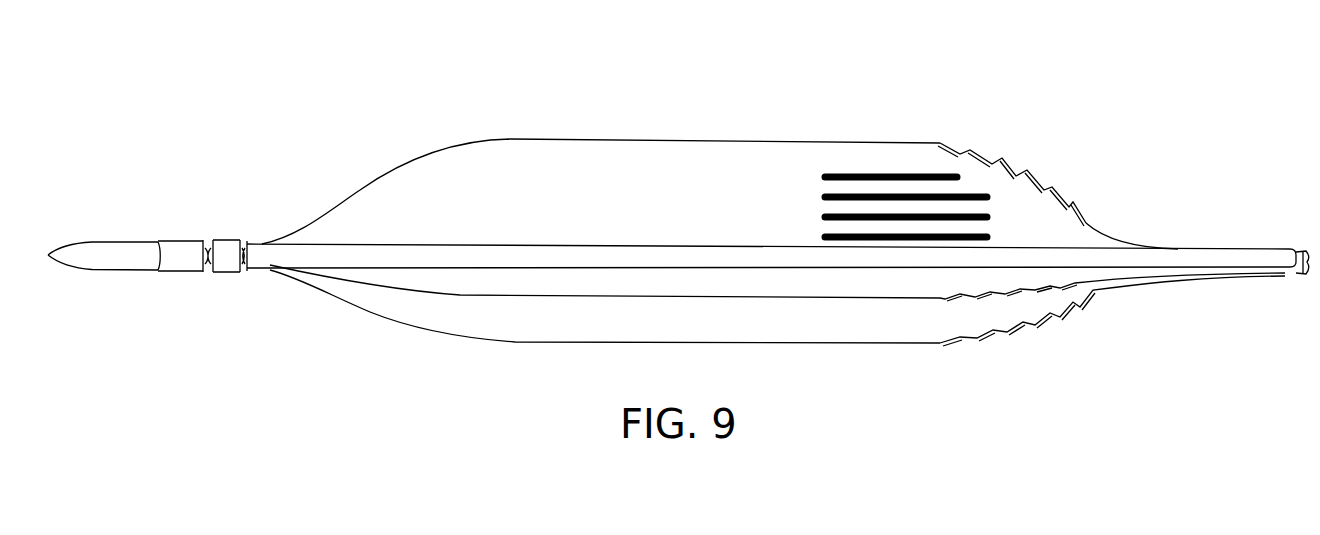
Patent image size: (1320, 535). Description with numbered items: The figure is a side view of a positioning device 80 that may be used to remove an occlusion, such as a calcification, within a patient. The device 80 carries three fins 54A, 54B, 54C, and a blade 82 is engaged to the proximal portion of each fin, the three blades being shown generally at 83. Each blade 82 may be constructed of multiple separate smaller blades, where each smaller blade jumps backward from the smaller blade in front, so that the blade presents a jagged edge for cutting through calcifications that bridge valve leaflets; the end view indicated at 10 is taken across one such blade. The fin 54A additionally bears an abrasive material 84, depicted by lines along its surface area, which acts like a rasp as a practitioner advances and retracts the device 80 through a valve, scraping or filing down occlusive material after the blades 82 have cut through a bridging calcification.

The positioning device 80 is at (1190, 102).
The blades engaged to proximal portion of fins 83 is at (1028, 83).
The blade 82 is at (950, 142).
The abrasive material 84 is at (871, 170).
The fin 54A is at (720, 163).
The fin 54B is at (760, 283).
The fin 54C is at (665, 333).
The end view section indicator 10 is at (1035, 157).